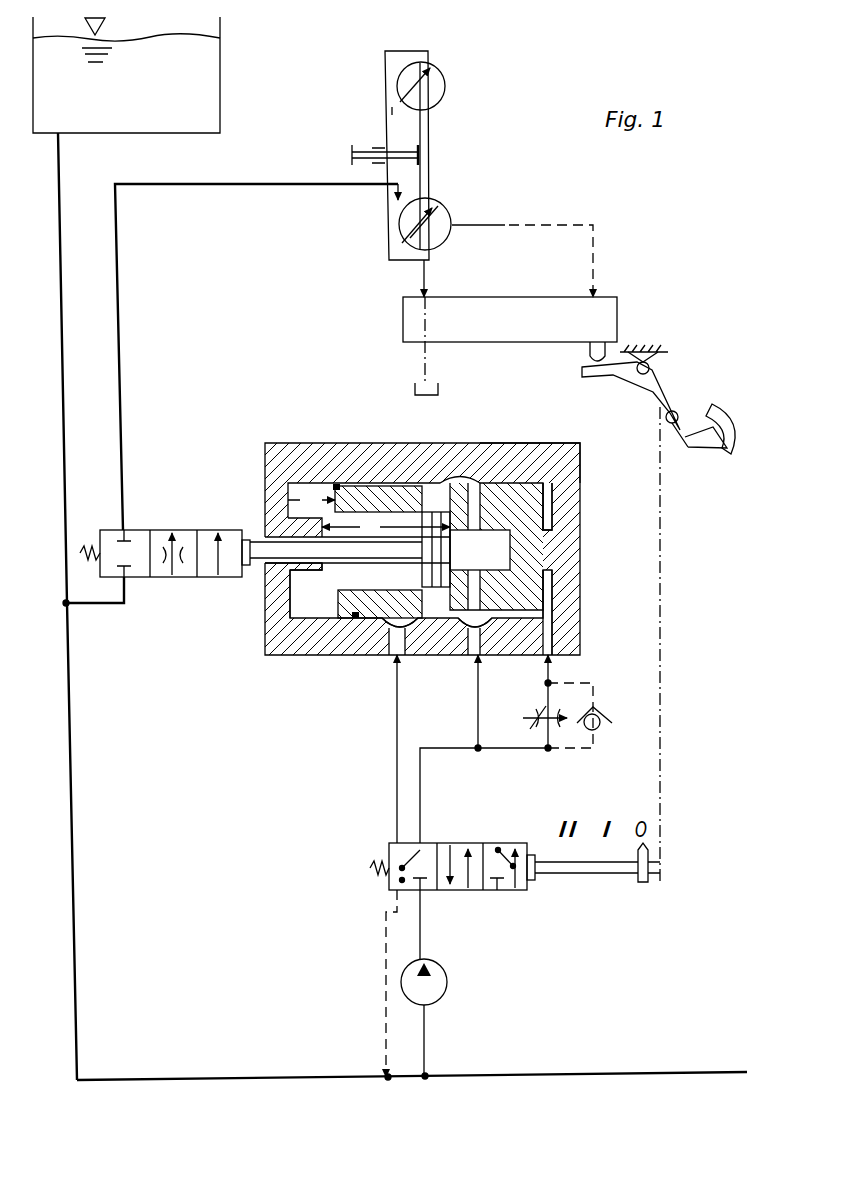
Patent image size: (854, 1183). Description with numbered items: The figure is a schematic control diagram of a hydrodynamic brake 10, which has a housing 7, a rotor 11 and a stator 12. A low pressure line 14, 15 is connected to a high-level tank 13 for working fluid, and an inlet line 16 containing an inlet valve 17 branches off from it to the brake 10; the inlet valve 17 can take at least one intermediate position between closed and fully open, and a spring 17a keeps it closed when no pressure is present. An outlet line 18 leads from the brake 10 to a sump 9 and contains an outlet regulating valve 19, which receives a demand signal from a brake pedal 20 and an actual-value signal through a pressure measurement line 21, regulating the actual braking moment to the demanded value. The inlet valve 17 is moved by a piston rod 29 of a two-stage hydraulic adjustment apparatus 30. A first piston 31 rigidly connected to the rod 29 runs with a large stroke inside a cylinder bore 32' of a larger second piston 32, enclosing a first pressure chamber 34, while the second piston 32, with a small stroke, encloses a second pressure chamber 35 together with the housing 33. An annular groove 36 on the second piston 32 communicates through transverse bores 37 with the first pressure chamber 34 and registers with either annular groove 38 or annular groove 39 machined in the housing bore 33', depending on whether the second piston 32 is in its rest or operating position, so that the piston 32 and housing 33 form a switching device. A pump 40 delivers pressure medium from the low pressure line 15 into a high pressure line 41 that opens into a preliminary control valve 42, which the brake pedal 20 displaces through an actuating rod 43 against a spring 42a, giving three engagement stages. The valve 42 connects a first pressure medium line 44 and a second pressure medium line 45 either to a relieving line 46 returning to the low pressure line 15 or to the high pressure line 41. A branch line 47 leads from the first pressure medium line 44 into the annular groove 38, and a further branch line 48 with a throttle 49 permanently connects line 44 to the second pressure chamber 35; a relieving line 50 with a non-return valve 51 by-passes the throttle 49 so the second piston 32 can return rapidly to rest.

The housing 7 is at (390, 210).
The sump 9 is at (415, 407).
The hydrodynamic brake 10 is at (372, 117).
The rotor 11 is at (410, 238).
The stator 12 is at (440, 218).
The high-level tank 13 is at (197, 82).
The low pressure line 14 is at (60, 258).
The low pressure line 15 is at (162, 1078).
The inlet line 16 is at (120, 257).
The inlet valve 17 is at (138, 570).
The spring 17a is at (92, 551).
The outlet line 18 is at (427, 373).
The outlet regulating valve 19 is at (521, 331).
The brake pedal 20 is at (653, 392).
The pressure measurement line 21 is at (548, 223).
The piston rod 29 is at (267, 553).
The two-stage hydraulic adjustment apparatus 30 is at (343, 677).
The first piston 31 is at (426, 508).
The second piston 32 is at (425, 457).
The cylinder bore 32' is at (380, 589).
The housing 33 is at (530, 443).
The housing bore 33' is at (298, 591).
The first pressure chamber 34 is at (503, 557).
The second pressure chamber 35 is at (547, 493).
The annular groove 36 is at (450, 657).
The transverse bores 37 is at (480, 546).
The annular groove 38 is at (483, 632).
The annular groove 39 is at (410, 657).
The pump 40 is at (410, 982).
The high pressure line 41 is at (423, 915).
The preliminary control valve 42 is at (528, 890).
The spring 42a is at (370, 871).
The actuating rod 43 is at (658, 417).
The first pressure medium line 44 is at (422, 796).
The second pressure medium line 45 is at (397, 797).
The relieving line 46 is at (400, 907).
The branch line 47 is at (478, 720).
The branch line 48 is at (548, 673).
The throttle 49 is at (530, 719).
The relieving line 50 is at (597, 689).
The non-return valve 51 is at (600, 728).